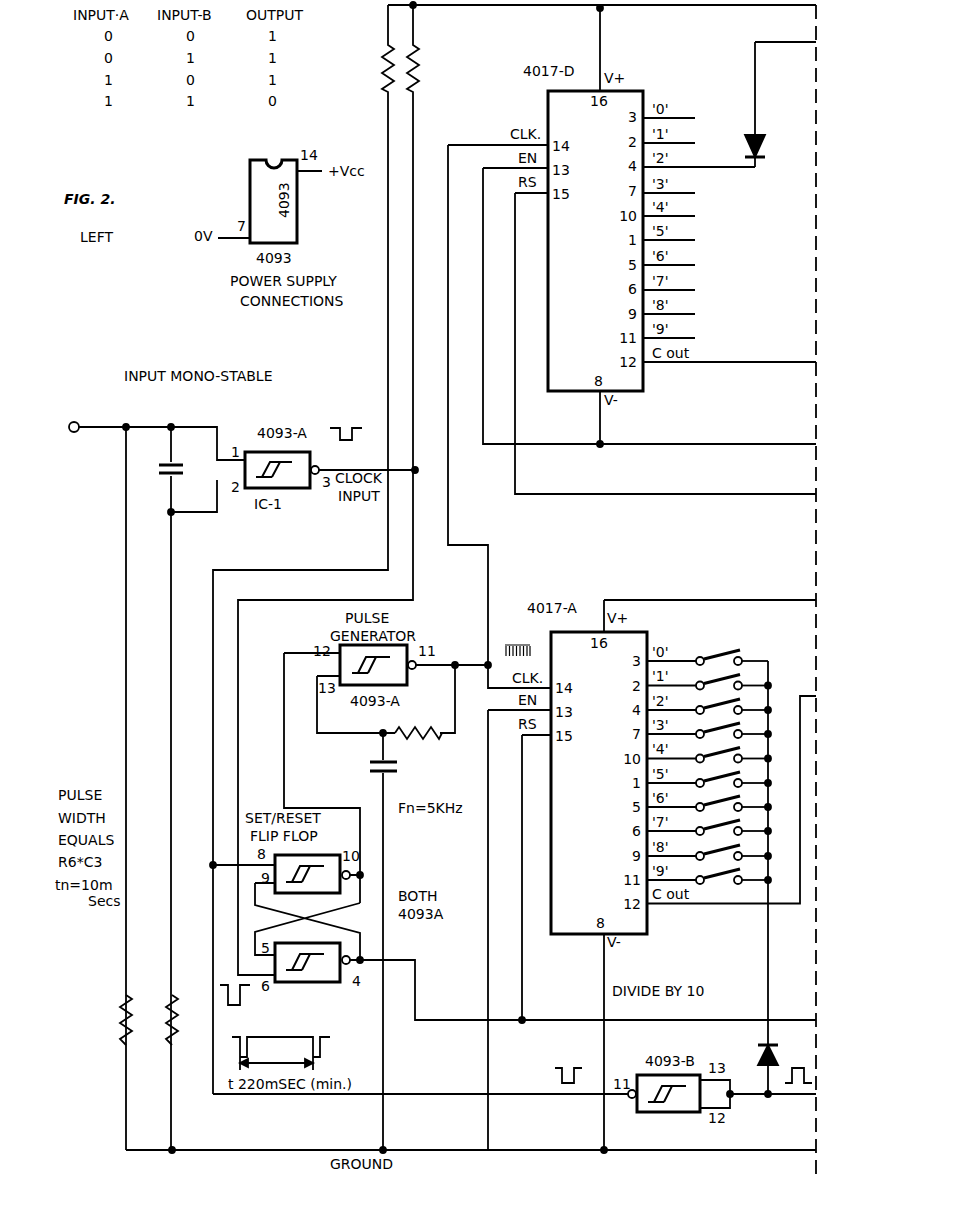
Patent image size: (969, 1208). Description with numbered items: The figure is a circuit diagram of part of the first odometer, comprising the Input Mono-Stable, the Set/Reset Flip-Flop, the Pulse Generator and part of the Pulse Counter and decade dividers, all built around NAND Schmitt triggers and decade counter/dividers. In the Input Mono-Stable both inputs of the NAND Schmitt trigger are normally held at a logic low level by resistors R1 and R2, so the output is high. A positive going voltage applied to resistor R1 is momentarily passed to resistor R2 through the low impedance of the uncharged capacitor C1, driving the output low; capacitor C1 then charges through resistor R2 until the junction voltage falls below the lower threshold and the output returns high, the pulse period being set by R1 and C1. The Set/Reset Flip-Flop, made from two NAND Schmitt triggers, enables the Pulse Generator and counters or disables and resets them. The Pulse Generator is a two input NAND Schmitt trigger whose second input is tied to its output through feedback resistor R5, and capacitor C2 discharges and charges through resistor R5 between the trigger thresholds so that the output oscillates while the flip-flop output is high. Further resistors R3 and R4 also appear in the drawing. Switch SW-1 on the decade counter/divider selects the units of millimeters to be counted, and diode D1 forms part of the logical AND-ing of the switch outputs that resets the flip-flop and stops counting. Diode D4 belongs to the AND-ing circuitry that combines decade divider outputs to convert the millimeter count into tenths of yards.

The resistor R1 is at (110, 1020).
The resistor R2 is at (159, 1020).
The resistor 47K R3 is at (303, 549).
The resistor 47K R4 is at (345, 490).
The feedback resistor R5 is at (418, 724).
The capacitor C1 is at (156, 471).
The capacitor C2 is at (401, 941).
The diode D1 is at (754, 1057).
The diode D4 is at (780, 115).
The switch SW-1 is at (733, 835).